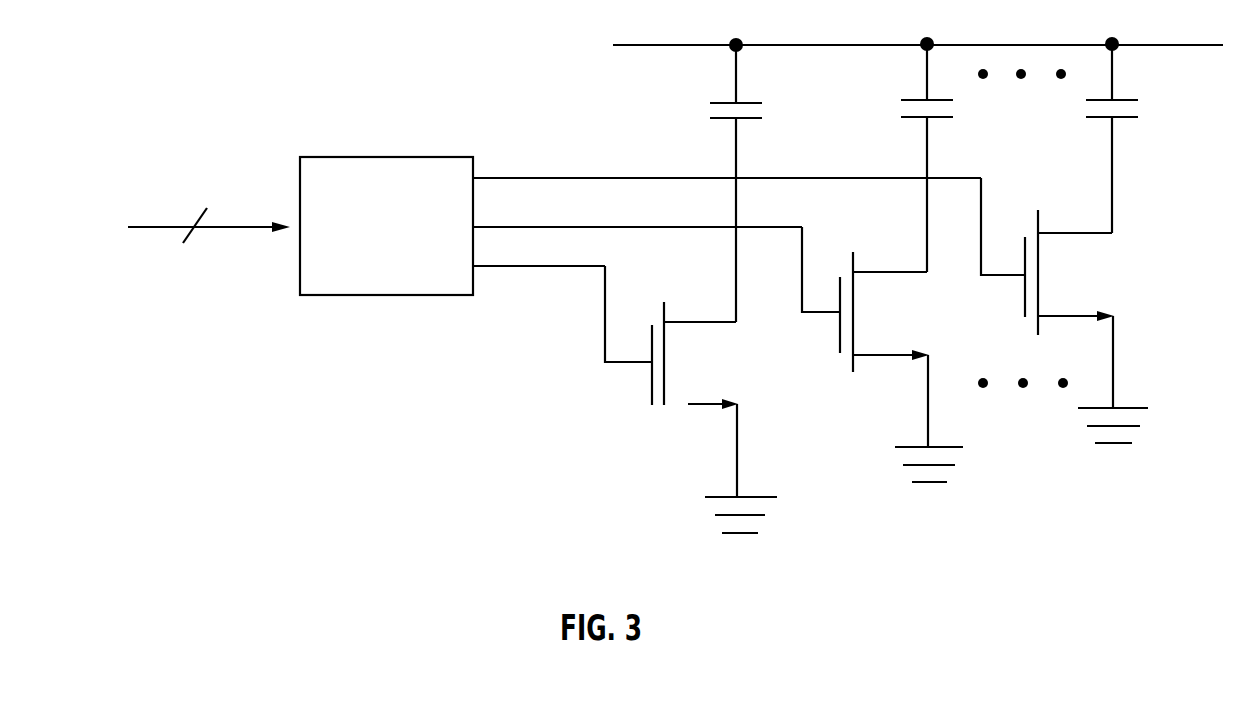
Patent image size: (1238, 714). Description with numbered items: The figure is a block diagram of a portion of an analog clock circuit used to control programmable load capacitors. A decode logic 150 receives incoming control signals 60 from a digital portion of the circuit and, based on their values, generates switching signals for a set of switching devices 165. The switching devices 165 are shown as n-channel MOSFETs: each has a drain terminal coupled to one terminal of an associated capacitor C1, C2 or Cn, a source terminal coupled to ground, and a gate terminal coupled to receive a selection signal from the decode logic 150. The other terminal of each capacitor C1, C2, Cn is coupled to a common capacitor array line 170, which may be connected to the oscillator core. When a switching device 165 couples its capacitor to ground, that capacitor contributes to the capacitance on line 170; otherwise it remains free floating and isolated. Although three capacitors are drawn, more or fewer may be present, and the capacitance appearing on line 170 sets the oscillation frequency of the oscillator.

The control signals 60 is at (193, 210).
The decode logic 150 is at (640, 204).
The switching devices 165 is at (850, 355).
The capacitor array line 170 is at (918, 40).
The capacitor C1 is at (753, 183).
The capacitor C2 is at (942, 158).
The capacitor Cn is at (1127, 139).